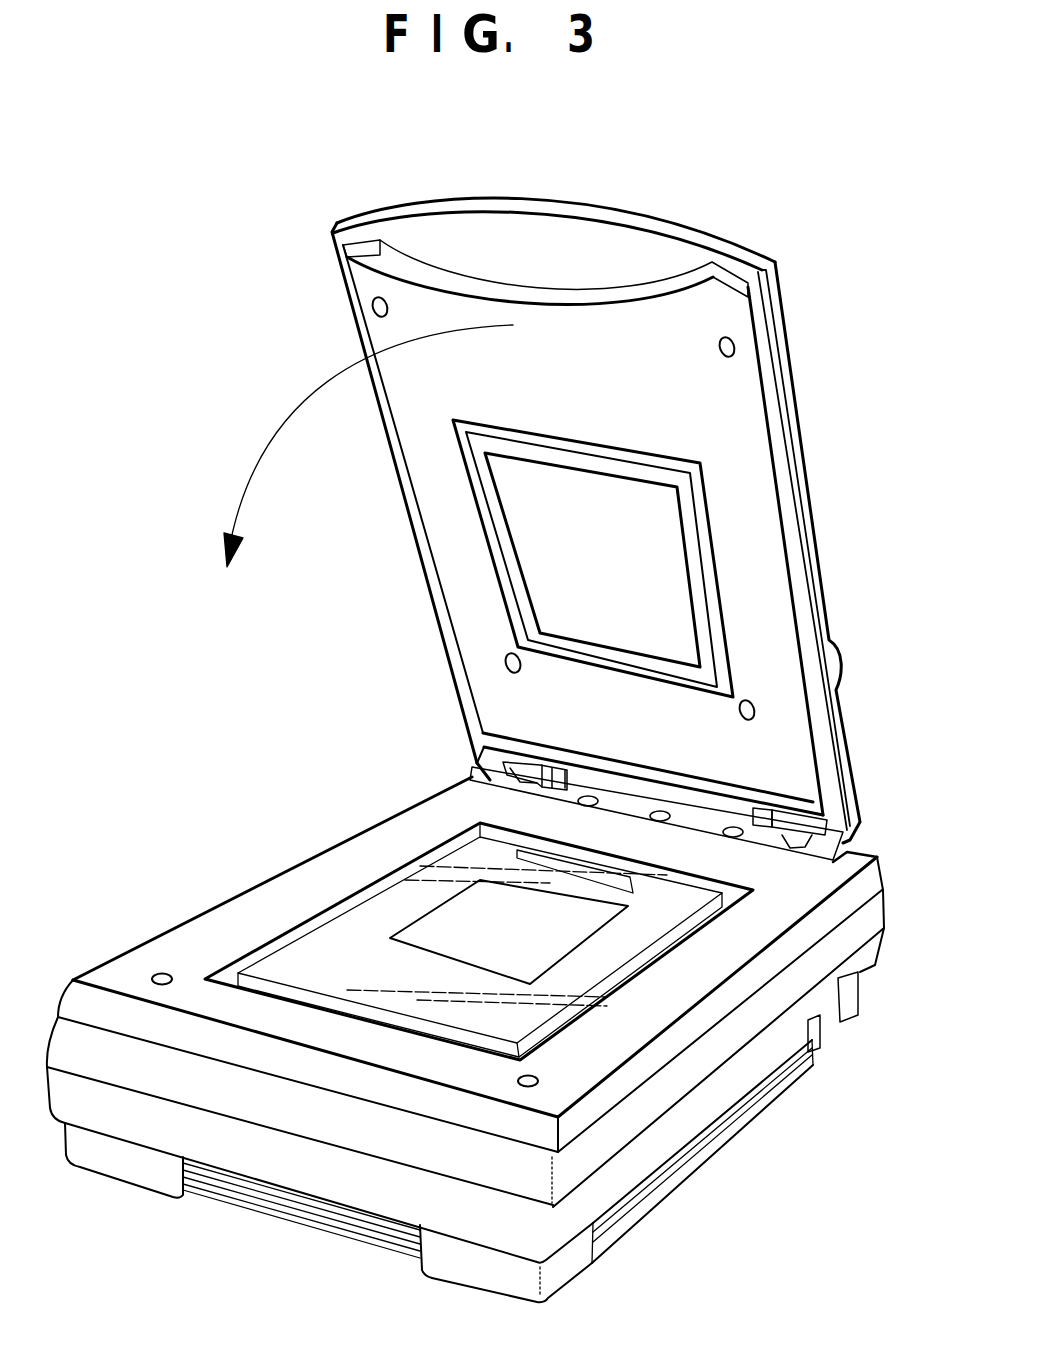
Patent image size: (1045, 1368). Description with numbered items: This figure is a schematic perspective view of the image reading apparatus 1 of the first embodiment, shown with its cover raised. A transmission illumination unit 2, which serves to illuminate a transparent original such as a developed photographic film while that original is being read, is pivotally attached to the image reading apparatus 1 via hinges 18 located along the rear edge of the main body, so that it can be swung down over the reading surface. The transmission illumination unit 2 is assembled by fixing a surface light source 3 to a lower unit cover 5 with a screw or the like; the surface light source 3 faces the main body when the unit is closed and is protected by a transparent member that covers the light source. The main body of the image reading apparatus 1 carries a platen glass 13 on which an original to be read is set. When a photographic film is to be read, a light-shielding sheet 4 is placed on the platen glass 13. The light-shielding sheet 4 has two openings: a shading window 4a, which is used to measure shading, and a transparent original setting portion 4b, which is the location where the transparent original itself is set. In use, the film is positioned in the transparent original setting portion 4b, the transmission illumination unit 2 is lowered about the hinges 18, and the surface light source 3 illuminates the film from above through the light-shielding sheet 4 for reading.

The image reading apparatus 1 is at (484, 1014).
The transmission illumination unit 2 is at (560, 496).
The surface light source 3 is at (658, 572).
The light-shielding sheet 4 is at (285, 963).
The shading window 4a is at (812, 1048).
The transparent original setting portion 4b is at (543, 950).
The lower unit cover 5 is at (463, 567).
The platen glass 13 is at (462, 927).
The hinges 18 is at (513, 763).